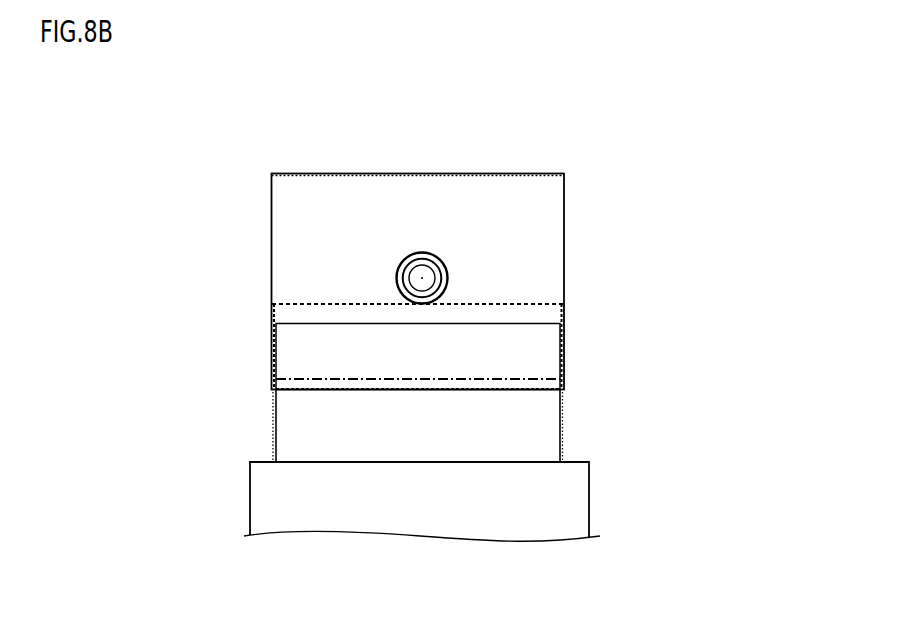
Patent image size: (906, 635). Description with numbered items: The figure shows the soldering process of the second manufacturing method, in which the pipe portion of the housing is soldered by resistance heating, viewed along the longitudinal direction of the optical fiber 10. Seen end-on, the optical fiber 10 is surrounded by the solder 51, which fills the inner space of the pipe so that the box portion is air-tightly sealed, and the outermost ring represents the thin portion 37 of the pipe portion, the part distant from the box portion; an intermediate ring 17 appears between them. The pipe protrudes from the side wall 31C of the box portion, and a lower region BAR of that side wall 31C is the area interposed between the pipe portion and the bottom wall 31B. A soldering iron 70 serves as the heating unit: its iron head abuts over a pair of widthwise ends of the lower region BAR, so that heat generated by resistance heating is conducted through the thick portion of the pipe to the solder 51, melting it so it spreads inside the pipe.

The side wall 31C is at (548, 214).
The lower region BAR is at (522, 303).
The bottom wall 31B is at (565, 388).
The soldering iron 70 is at (505, 458).
The thin portion 37 is at (398, 275).
The intermediate tube 17 is at (416, 259).
The solder 51 is at (428, 263).
The optical fiber 10 is at (428, 281).